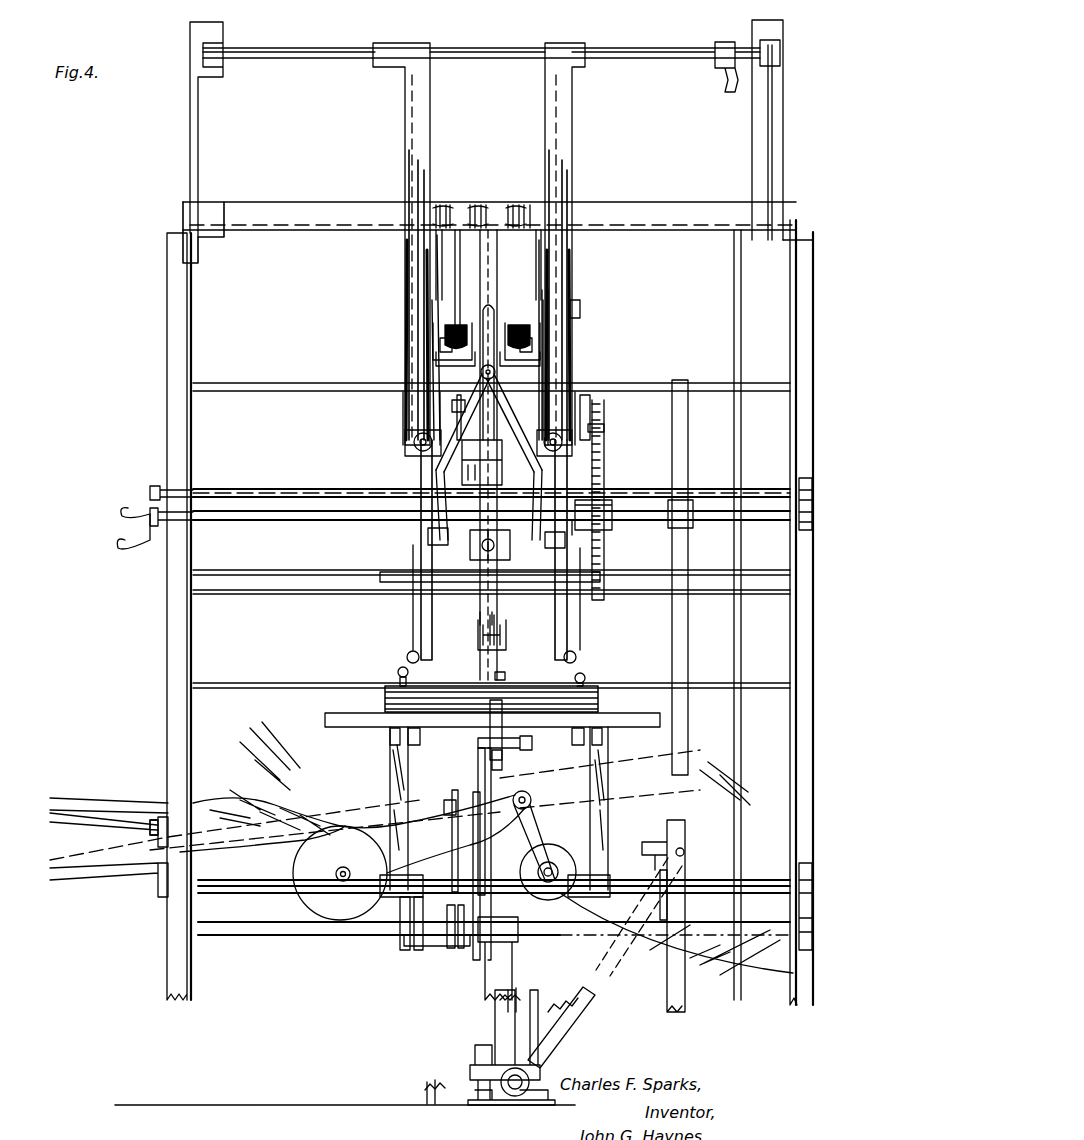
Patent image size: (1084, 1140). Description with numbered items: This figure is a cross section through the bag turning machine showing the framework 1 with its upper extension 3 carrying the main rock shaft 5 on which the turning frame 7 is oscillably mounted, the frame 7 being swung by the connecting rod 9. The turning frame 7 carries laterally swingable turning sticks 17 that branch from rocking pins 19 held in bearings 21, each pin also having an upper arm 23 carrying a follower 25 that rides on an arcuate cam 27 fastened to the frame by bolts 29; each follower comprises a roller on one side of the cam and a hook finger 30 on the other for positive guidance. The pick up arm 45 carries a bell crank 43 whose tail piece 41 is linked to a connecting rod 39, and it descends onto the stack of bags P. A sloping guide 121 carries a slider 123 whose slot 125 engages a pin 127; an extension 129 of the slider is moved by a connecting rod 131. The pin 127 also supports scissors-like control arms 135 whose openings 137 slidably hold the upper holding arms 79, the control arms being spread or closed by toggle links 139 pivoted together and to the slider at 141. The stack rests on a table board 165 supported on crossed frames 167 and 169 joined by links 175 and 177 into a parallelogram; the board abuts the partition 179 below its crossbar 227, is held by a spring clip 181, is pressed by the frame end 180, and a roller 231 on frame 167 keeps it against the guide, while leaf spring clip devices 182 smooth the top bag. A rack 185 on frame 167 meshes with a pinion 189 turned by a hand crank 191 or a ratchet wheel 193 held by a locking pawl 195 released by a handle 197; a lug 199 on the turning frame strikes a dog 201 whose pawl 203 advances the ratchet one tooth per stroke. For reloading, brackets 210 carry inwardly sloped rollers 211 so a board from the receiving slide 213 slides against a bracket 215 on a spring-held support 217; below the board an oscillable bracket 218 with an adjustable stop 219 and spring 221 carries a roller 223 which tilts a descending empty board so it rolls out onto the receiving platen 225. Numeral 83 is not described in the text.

The framework 1 is at (178, 262).
The upper extension 3 is at (205, 112).
The main rock shaft 5 is at (667, 48).
The turning frame 7 is at (545, 98).
The connecting rod 9 is at (742, 296).
The turning sticks 17 is at (425, 622).
The rocking pins 19 is at (410, 372).
The bearings 21 is at (410, 262).
The arm 23 is at (432, 350).
The followers 25 is at (456, 322).
The arcuate cams 27 is at (447, 345).
The bolts 29 is at (446, 202).
The hook finger 30 is at (440, 388).
The connecting rod 39 is at (500, 620).
The tail piece 41 is at (480, 618).
The bell crank 43 is at (518, 650).
The pick up arm 45 is at (500, 672).
The upper holding arms 79 is at (408, 655).
The stop pin 83 is at (396, 672).
The stack of bags P is at (629, 674).
The sloping guide 121 is at (462, 248).
The slider 123 is at (490, 298).
The slot 125 is at (576, 320).
The pin 127 is at (456, 406).
The extension 129 is at (462, 470).
The connecting rod 131 is at (430, 430).
The control arms 135 is at (415, 570).
The openings 137 is at (412, 652).
The toggle links 139 is at (437, 534).
The pivot 141 is at (504, 550).
The table board 165 is at (630, 714).
The crossed frame 167 is at (395, 768).
The crossed frame 169 is at (485, 776).
The link 175 is at (450, 832).
The link 177 is at (432, 945).
The partition 179 is at (312, 700).
The end of frame 180 is at (488, 730).
The spring clip 181 is at (498, 766).
The flexible leaf spring clip devices 182 is at (500, 682).
The rack 185 is at (690, 700).
The pinion 189 is at (684, 496).
The hand crank 191 is at (140, 548).
The ratchet wheel 193 is at (605, 466).
The locking pawl 195 is at (668, 520).
The handle 197 is at (140, 504).
The lug 199 is at (606, 291).
The dog 201 is at (590, 410).
The pawl 203 is at (596, 428).
The brackets 210 is at (232, 800).
The rollers 211 is at (325, 905).
The receiving slide 213 is at (85, 830).
The bracket 215 is at (655, 848).
The support 217 is at (686, 870).
The bracket 218 is at (534, 962).
The adjustable stop 219 is at (470, 1068).
The spring 221 is at (500, 1002).
The roller 223 is at (530, 804).
The receiving platen 225 is at (108, 874).
The crossbar 227 is at (330, 690).
The roller 231 is at (395, 738).